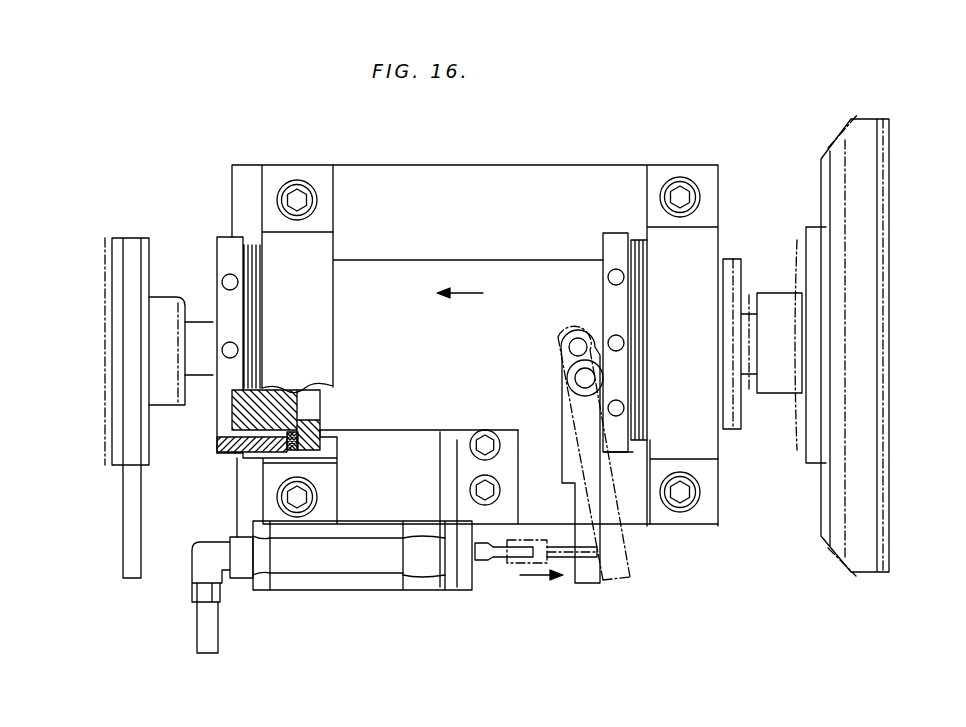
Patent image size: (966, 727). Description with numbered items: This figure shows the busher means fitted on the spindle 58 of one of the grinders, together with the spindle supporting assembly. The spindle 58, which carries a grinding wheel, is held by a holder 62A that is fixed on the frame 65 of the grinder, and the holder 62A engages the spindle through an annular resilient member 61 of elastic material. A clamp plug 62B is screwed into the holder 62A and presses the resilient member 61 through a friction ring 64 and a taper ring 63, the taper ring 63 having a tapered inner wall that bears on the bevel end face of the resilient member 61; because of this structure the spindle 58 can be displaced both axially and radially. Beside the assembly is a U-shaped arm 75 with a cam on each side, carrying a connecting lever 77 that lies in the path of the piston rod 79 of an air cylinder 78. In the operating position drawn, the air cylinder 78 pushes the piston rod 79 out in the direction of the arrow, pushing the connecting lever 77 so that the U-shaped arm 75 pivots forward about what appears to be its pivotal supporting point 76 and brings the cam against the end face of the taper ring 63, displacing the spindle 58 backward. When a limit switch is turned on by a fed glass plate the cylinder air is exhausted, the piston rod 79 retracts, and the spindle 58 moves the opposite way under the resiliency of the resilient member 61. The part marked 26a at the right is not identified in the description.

The plate 26a is at (870, 257).
The spindle 58 is at (365, 270).
The annular resilient member 61 is at (322, 425).
The holder 62A is at (703, 245).
The clamp plug 62B is at (224, 458).
The taper ring 63 is at (310, 452).
The friction ring 64 is at (268, 450).
The frame of the grinder 65 is at (370, 170).
The U-shaped arm 75 is at (552, 437).
The pivot pin 76 is at (576, 377).
The connecting lever 77 is at (590, 533).
The air cylinder 78 is at (378, 580).
The piston rod 79 is at (505, 553).